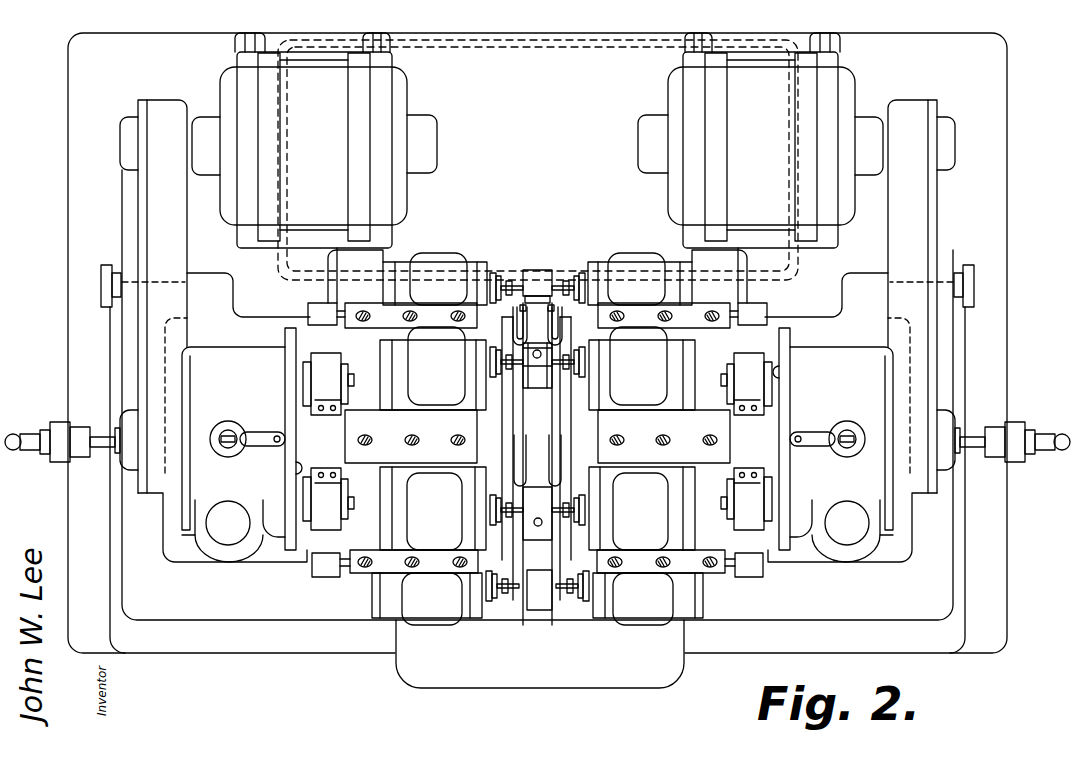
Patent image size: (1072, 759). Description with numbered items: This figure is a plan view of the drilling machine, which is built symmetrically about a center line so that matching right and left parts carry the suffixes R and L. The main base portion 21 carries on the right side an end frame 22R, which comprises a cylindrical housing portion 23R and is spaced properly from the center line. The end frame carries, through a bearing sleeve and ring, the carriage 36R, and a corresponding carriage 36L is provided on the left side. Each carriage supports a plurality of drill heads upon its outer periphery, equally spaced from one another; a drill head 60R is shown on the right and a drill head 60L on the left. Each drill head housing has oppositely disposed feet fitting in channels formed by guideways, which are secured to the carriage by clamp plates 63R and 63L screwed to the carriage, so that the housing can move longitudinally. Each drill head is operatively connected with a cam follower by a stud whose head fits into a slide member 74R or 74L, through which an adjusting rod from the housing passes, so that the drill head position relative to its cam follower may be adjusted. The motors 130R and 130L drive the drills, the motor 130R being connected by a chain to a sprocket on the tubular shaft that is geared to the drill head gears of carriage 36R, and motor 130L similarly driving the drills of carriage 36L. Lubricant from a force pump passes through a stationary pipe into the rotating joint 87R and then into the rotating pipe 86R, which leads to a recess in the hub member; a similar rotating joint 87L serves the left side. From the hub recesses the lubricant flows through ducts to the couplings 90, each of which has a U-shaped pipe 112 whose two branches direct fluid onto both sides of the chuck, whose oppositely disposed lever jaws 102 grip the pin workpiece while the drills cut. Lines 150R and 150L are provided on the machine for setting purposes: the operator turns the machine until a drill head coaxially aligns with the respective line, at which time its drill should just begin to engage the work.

The main base portion 21 is at (240, 648).
The motor 130L is at (383, 105).
The motor 130R is at (680, 97).
The carriage 36L is at (306, 339).
The carriage 36R is at (768, 532).
The slide member 74L is at (309, 378).
The slide member 74R is at (766, 389).
The clamp plate 63L is at (360, 438).
The clamp plate 63R is at (716, 452).
The drill head 60L is at (438, 392).
The drill head 60R is at (632, 394).
The line 150L is at (293, 470).
The line 150R is at (793, 373).
The cylindrical housing portion 23R is at (858, 473).
The end frame 22R is at (818, 556).
The pipe 86R is at (976, 430).
The rotating joint 87L is at (67, 418).
The rotating joint 87R is at (1013, 428).
The coupling 90 is at (538, 437).
The lever jaws 102 is at (538, 369).
The U-shaped pipe 112 is at (514, 328).